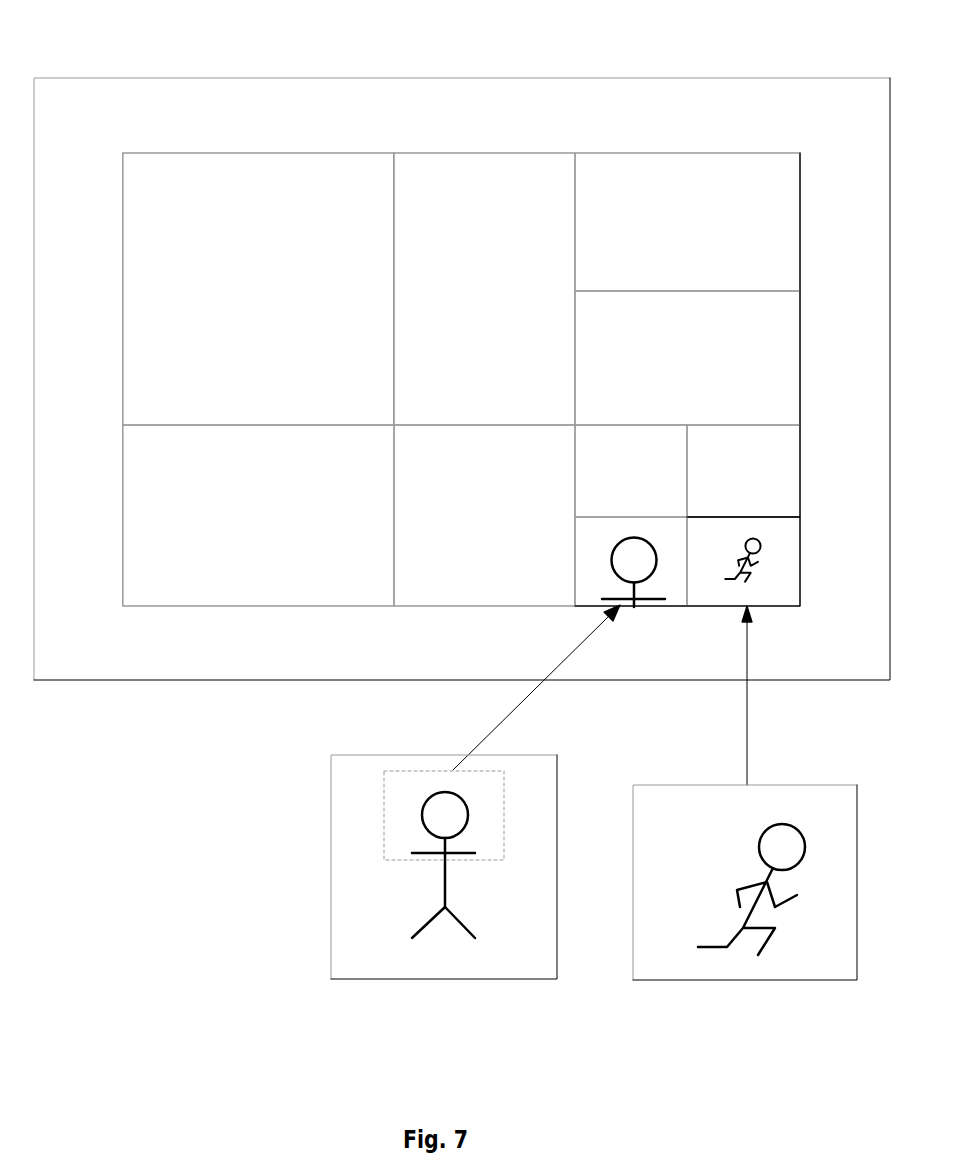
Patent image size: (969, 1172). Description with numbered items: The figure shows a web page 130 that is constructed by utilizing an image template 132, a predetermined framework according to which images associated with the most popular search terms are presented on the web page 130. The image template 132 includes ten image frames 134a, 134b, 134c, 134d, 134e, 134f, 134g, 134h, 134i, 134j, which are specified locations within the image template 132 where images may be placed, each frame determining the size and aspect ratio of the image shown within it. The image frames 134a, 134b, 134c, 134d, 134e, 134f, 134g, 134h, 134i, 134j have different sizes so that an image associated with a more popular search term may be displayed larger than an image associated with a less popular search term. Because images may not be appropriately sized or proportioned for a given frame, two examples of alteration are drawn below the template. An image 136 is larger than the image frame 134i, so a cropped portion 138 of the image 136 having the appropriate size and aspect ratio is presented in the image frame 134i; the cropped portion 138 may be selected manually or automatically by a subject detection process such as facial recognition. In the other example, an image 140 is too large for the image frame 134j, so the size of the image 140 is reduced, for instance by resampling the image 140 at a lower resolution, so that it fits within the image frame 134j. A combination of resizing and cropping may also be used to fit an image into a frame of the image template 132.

The web page 130 is at (197, 78).
The image template 132 is at (485, 132).
The image frame 134a is at (230, 201).
The image frame 134b is at (207, 458).
The image frame 134c is at (480, 197).
The image frame 134d is at (470, 466).
The image frame 134e is at (648, 185).
The image frame 134f is at (657, 327).
The image frame 134g is at (643, 452).
The image frame 134h is at (748, 452).
The image frame 134i is at (612, 537).
The image frame 134j is at (725, 537).
The image 136 is at (332, 840).
The cropped portion 138 is at (483, 862).
The image 140 is at (793, 785).